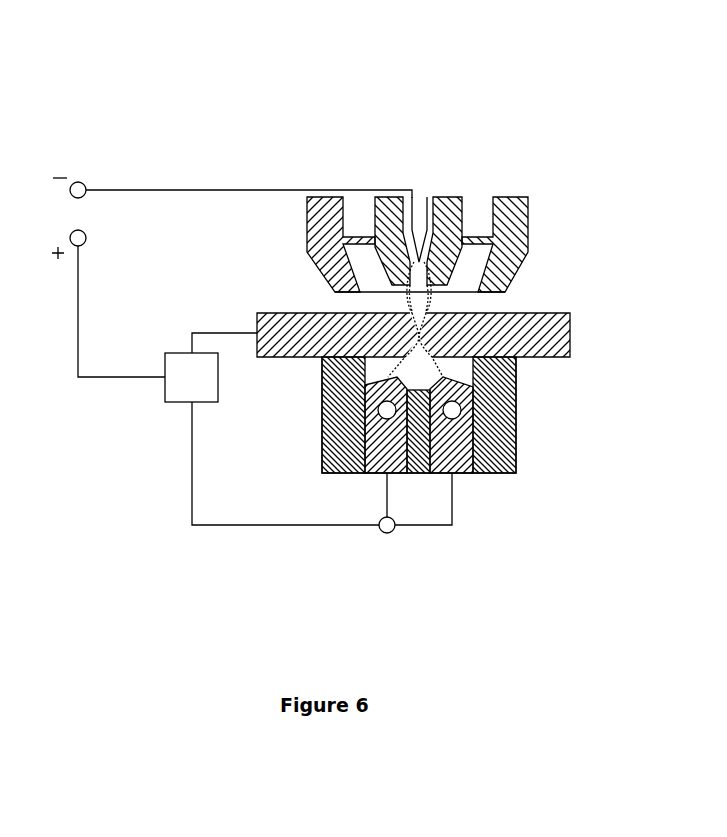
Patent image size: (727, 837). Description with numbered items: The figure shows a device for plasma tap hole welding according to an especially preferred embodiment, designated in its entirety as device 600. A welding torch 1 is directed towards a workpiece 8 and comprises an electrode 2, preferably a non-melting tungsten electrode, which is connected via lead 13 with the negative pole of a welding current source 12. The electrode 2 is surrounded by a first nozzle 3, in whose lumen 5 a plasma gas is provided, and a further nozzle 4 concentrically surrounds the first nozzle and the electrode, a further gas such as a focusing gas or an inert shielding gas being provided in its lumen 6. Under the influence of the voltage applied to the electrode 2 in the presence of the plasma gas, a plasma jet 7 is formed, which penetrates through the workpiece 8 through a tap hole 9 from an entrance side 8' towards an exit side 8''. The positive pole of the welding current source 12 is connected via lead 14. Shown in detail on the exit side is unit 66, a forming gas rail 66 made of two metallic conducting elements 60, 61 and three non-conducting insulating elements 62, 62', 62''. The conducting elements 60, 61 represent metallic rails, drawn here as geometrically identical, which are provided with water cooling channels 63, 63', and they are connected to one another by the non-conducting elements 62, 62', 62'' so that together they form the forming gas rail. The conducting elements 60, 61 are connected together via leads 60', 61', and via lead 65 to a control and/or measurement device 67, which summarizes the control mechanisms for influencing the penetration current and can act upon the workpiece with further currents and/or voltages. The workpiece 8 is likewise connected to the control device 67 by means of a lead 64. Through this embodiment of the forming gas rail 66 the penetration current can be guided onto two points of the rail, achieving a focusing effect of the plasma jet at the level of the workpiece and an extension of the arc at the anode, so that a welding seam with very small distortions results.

The device for plasma tap hole welding 600 is at (371, 85).
The welding current source 12 is at (90, 175).
The lead 13 is at (213, 190).
The welding torch 1 is at (369, 195).
The lead 14 is at (78, 292).
The lead 64 is at (205, 333).
The lead 65 is at (191, 432).
The control device 67 is at (191, 377).
The lumen 6 is at (357, 208).
The electrode 2 is at (420, 200).
The lumen 5 is at (430, 205).
The first nozzle 3 is at (462, 205).
The further nozzle 4 is at (528, 217).
The tap hole 9 is at (442, 308).
The workpiece 8 is at (397, 309).
The entrance side 8' is at (577, 245).
The exit side 8'' is at (580, 414).
The forming gas rail 66 is at (431, 476).
The non-conducting element 62 is at (308, 415).
The non-conducting element 62' is at (519, 423).
The non-conducting element 62'' is at (474, 533).
The water cooling channel 63 is at (339, 425).
The water cooling channel 63' is at (482, 447).
The conducting element 60 is at (428, 481).
The lead 60' is at (348, 495).
The conducting element 61 is at (455, 512).
The lead 61' is at (396, 549).
The plasma jet 7 is at (484, 358).